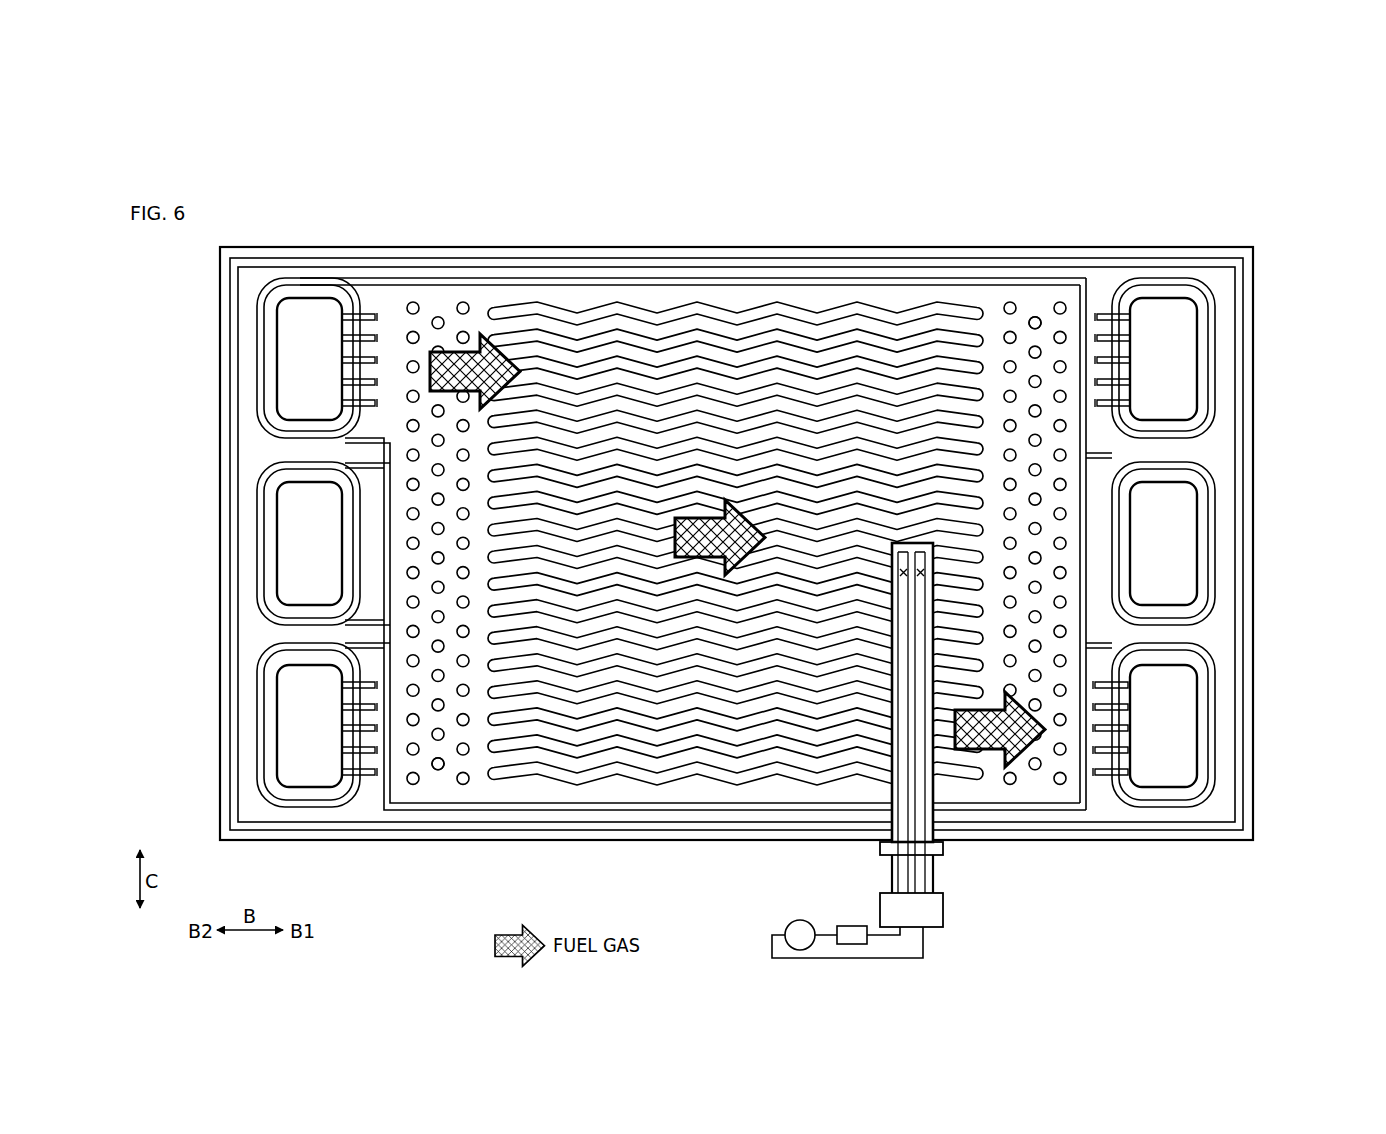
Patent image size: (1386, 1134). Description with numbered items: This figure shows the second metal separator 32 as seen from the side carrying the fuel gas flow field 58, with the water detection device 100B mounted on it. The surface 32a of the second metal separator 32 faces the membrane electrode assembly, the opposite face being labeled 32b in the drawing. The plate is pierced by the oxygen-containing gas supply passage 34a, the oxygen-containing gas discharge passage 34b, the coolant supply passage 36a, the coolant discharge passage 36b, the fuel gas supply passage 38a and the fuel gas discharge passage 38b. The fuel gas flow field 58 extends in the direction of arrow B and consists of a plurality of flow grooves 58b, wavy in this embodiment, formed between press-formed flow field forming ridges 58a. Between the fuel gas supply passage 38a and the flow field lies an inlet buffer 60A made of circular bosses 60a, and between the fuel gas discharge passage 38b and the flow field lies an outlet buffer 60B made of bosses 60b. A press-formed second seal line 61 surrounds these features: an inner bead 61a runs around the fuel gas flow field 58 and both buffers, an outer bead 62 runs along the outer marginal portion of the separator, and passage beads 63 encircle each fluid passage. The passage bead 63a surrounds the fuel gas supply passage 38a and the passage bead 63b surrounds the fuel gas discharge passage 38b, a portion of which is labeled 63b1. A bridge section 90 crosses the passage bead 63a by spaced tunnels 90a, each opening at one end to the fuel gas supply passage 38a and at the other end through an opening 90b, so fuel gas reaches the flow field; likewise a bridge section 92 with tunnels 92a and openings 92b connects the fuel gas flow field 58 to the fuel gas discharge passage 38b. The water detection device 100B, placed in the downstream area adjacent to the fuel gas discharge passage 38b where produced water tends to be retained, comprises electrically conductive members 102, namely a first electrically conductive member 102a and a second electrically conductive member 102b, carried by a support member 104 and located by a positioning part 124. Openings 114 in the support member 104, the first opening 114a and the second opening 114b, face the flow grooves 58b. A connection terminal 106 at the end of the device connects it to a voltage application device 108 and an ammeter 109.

The second metal separator 32 is at (1210, 217).
The surface 32a is at (517, 815).
The second separator plate 32b is at (580, 812).
The oxygen-containing gas supply passage 34a is at (1178, 347).
The oxygen-containing gas discharge passage 34b is at (295, 743).
The coolant supply passage 36a is at (1180, 533).
The coolant discharge passage 36b is at (293, 543).
The fuel gas supply passage 38a is at (292, 333).
The fuel gas discharge passage 38b is at (1178, 756).
The fuel gas flow field 58 is at (735, 487).
The flow field forming ridges 58a is at (546, 335).
The flow grooves 58b is at (683, 325).
The inlet buffer 60A is at (450, 603).
The outlet buffer 60B is at (1037, 495).
The bosses 60a is at (437, 771).
The bosses 60b is at (1034, 316).
The second seal line 61 is at (1204, 598).
The inner bead 61a is at (1097, 806).
The outer bead 62 is at (1174, 827).
The passage beads 63 is at (723, 543).
The passage bead 63a is at (258, 419).
The passage bead 63b is at (1220, 764).
The inner wall of passage bead 63b1 is at (1112, 695).
The bridge section 90 is at (359, 307).
The tunnels 90a is at (345, 380).
The opening 90b is at (378, 360).
The bridge section 92 is at (1101, 806).
The tunnels 92a is at (1126, 740).
The opening 92b is at (1095, 728).
The water detection device 100B is at (1026, 699).
The electrically conductive members 102 is at (816, 726).
The first electrically conductive member 102a is at (903, 700).
The second electrically conductive member 102b is at (898, 792).
The support member 104 is at (933, 875).
The connection terminal 106 is at (930, 928).
The voltage application device 108 is at (853, 924).
The ammeter 109 is at (786, 934).
The detection electrode 114 is at (1126, 524).
The first opening 114a is at (904, 570).
The second opening 114b is at (920, 574).
The positioning part 124 is at (945, 850).